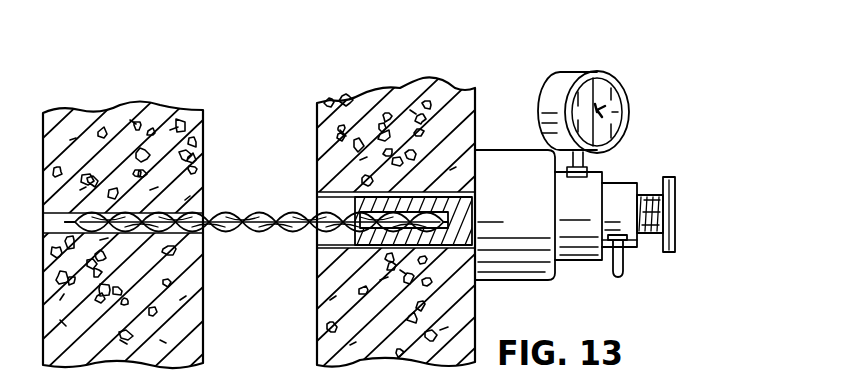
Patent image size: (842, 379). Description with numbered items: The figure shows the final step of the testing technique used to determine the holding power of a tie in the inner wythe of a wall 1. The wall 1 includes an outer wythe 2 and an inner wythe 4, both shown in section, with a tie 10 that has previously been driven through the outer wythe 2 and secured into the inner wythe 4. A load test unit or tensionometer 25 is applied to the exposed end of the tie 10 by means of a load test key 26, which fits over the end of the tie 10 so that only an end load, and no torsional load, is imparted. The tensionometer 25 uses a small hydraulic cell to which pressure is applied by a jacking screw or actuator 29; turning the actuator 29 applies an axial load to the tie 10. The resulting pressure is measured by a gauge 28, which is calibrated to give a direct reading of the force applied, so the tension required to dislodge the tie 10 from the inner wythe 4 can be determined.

The wall 1 is at (293, 68).
The outer wythe 2 is at (489, 124).
The inner wythe 4 is at (215, 143).
The tie 10 is at (283, 245).
The tensionometer 25 is at (640, 169).
The load test key 26 is at (442, 236).
The gauge 28 is at (630, 93).
The jacking screw or actuator 29 is at (675, 183).